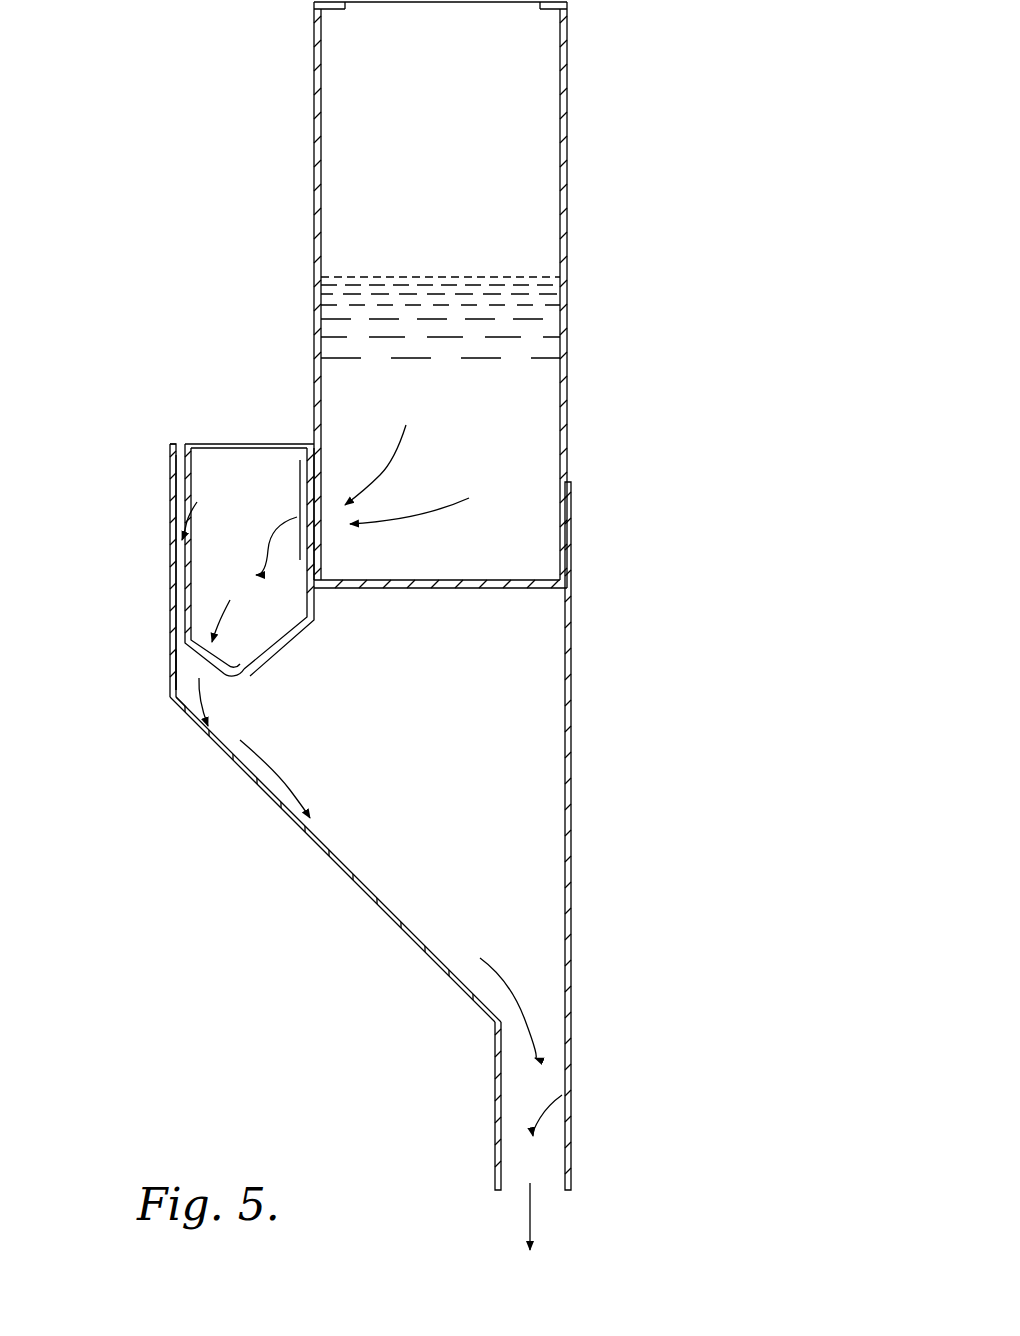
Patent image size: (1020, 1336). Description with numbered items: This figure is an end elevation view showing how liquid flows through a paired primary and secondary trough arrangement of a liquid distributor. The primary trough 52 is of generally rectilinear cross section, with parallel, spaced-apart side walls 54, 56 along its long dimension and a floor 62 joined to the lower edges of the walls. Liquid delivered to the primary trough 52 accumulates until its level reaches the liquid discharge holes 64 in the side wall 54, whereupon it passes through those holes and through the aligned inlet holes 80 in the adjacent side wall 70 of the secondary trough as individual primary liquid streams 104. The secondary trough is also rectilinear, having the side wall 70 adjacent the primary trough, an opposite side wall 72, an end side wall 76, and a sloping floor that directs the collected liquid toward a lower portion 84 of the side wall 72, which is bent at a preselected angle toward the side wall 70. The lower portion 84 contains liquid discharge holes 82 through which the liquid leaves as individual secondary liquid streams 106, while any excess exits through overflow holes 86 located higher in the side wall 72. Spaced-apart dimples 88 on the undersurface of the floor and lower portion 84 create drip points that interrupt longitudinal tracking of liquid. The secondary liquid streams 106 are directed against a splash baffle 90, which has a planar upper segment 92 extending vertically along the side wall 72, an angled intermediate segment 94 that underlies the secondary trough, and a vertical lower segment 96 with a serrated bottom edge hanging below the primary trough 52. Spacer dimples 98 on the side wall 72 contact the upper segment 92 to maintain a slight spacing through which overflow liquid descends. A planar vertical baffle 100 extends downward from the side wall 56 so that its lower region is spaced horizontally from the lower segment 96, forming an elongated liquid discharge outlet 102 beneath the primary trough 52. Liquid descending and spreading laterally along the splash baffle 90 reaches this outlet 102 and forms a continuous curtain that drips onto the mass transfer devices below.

The primary trough 52 is at (573, 103).
The side wall 54 is at (318, 178).
The side wall 56 is at (562, 184).
The floor 62 is at (425, 588).
The liquid discharge holes 64 is at (320, 535).
The side wall 70 is at (308, 450).
The side wall 72 is at (190, 532).
The side wall 76 is at (231, 445).
The inlet holes 80 is at (306, 502).
The liquid discharge holes 82 is at (178, 692).
The lower portion 84 is at (180, 655).
The overflow holes 86 is at (196, 455).
The dimples 88 is at (245, 675).
The splash baffle 90 is at (165, 468).
The upper segment 92 is at (170, 450).
The intermediate segment 94 is at (237, 762).
The lower segment 96 is at (497, 1098).
The spacer dimples 98 is at (182, 565).
The vertical baffle 100 is at (571, 732).
The liquid discharge outlet 102 is at (562, 1095).
The primary liquid streams 104 is at (276, 572).
The secondary liquid streams 106 is at (184, 660).